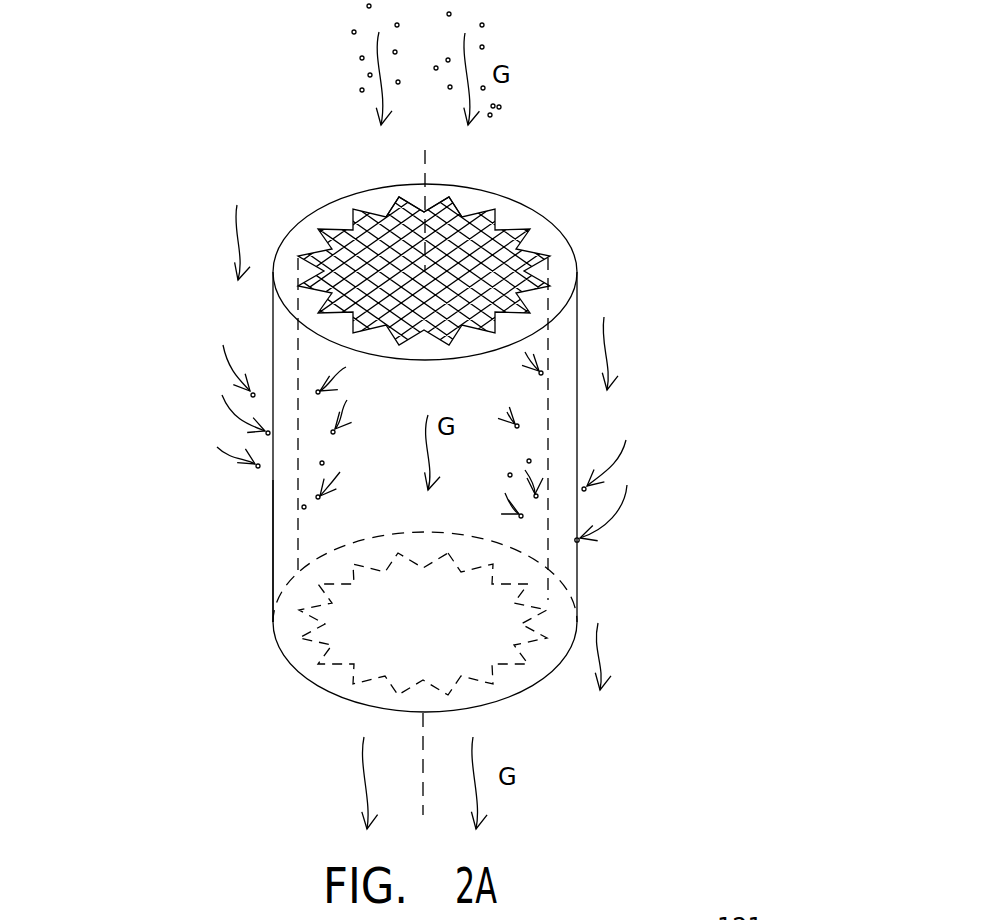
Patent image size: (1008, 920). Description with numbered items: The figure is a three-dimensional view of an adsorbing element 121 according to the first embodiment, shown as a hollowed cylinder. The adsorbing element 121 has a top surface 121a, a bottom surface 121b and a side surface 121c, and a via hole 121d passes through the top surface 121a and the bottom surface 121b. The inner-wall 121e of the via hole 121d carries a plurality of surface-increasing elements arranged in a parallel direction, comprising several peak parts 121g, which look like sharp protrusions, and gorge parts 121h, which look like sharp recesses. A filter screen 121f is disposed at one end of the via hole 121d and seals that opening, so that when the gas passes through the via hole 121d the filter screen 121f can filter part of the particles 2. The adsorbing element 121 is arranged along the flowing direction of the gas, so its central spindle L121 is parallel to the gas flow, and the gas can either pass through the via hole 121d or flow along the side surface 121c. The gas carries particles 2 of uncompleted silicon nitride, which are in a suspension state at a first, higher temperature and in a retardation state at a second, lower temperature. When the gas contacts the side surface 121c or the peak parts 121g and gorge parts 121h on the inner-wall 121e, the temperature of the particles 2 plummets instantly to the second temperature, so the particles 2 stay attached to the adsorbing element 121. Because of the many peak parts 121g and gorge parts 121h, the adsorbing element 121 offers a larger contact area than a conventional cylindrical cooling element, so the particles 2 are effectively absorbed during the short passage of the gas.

The adsorbing element 121 is at (788, 745).
The top surface 121a is at (564, 254).
The bottom surface 121b is at (530, 702).
The side surface 121c is at (272, 535).
The via hole 121d is at (337, 262).
The inner-wall 121e is at (300, 530).
The filter screen 121f is at (345, 278).
The peak parts 121g is at (497, 230).
The gorge parts 121h is at (561, 252).
The particles 2 is at (582, 542).
The central spindle L121 is at (426, 484).